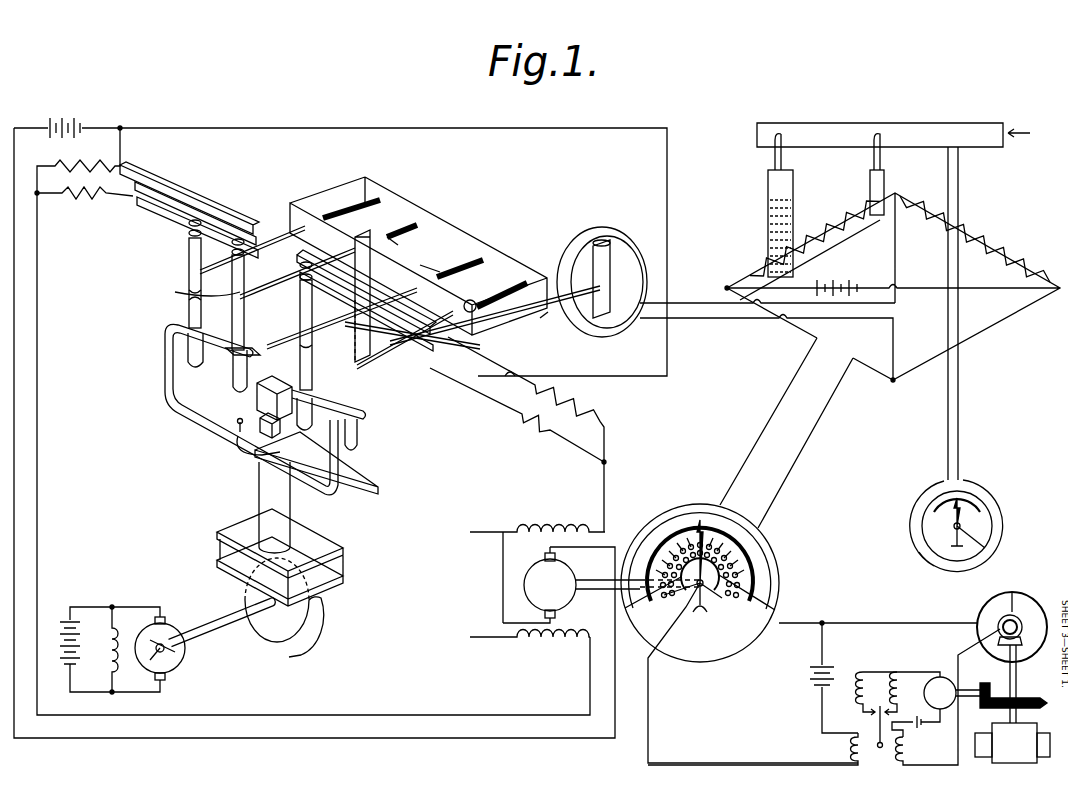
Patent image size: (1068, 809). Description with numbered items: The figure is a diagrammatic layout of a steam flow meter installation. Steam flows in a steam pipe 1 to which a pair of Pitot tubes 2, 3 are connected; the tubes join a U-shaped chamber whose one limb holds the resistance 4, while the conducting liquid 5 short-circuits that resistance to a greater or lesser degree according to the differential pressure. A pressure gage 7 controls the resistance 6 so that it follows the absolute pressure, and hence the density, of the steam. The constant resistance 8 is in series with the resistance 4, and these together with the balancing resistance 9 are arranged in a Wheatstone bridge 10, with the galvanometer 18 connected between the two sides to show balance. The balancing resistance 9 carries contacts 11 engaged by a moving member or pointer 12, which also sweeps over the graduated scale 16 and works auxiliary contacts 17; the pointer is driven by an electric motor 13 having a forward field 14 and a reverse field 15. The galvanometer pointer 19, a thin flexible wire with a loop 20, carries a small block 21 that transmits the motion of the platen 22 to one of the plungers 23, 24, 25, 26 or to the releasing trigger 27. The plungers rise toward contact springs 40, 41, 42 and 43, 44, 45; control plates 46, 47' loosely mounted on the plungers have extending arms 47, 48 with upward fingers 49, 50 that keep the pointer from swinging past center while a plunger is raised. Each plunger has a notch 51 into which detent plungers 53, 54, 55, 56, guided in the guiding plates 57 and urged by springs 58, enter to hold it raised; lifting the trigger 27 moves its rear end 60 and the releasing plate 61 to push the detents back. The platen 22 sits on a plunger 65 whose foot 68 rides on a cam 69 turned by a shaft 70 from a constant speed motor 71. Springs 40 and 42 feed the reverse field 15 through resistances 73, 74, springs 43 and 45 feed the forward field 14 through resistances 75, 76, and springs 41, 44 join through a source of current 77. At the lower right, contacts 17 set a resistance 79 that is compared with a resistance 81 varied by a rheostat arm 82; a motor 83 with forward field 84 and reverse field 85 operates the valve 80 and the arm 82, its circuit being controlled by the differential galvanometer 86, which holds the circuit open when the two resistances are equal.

The steam pipe 1 is at (932, 128).
The Pitot tube 2 is at (775, 157).
The Pitot tube 3 is at (880, 160).
The resistance 4 is at (815, 240).
The conducting liquid 5 is at (768, 222).
The resistance 6 is at (975, 503).
The pressure gage 7 is at (985, 548).
The resistance 8 is at (1010, 262).
The balancing resistance 9 is at (745, 553).
The Wheatstone bridge 10 is at (745, 283).
The contacts 11 is at (664, 598).
The moving member 12 is at (686, 607).
The electric motor 13 is at (566, 574).
The forward field 14 is at (524, 565).
The reverse field 15 is at (520, 645).
The graduated scale 16 is at (693, 516).
The contacts 17 is at (722, 600).
The galvanometer 18 is at (598, 240).
The pointer 19 is at (553, 323).
The loop 20 is at (495, 315).
The block 21 is at (258, 430).
The platen 22 is at (378, 490).
The plunger 23 is at (188, 252).
The plunger 24 is at (248, 280).
The plunger 25 is at (300, 315).
The plunger 26 is at (415, 378).
The releasing trigger 27 is at (268, 382).
The contact spring 40 is at (160, 168).
The contact spring 41 is at (178, 183).
The contact spring 42 is at (195, 200).
The contact spring 43 is at (400, 323).
The contact spring 44 is at (455, 345).
The contact spring 45 is at (432, 360).
The control plate 46 is at (188, 345).
The control plate 47 is at (349, 407).
The bracket frame 47' is at (226, 409).
The extending arm 48 is at (350, 455).
The finger 49 is at (244, 452).
The finger 50 is at (238, 432).
The notch 51 is at (175, 292).
The detent plunger 53 is at (275, 244).
The detent plunger 54 is at (274, 290).
The detent plunger 55 is at (431, 255).
The detent plunger 56 is at (469, 296).
The guiding plates 57 is at (410, 204).
The springs 58 is at (345, 212).
The rear end 60 is at (360, 237).
The releasing plate 61 is at (401, 247).
The plunger 65 is at (258, 488).
The foot 68 is at (330, 552).
The cam 69 is at (318, 620).
The shaft 70 is at (230, 625).
The constant speed motor 71 is at (170, 630).
The resistance 73 is at (90, 160).
The resistance 74 is at (84, 200).
The resistance 75 is at (590, 415).
The resistance 76 is at (540, 432).
The source of current 77 is at (66, 118).
The resistance 79 is at (700, 610).
The valve 80 is at (992, 730).
The resistance 81 is at (978, 618).
The rheostat arm 82 is at (1018, 622).
The motor 83 is at (937, 704).
The forward field 84 is at (863, 680).
The reverse field 85 is at (883, 710).
The differential galvanometer 86 is at (876, 742).